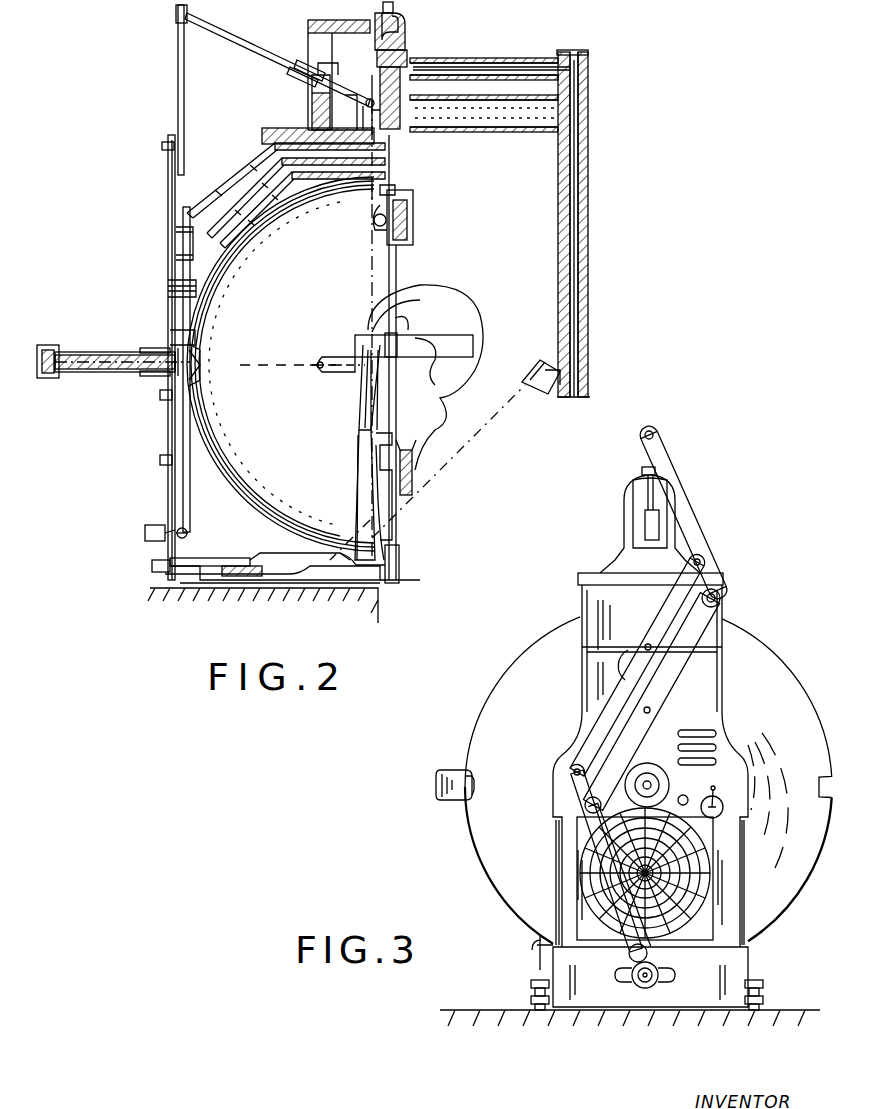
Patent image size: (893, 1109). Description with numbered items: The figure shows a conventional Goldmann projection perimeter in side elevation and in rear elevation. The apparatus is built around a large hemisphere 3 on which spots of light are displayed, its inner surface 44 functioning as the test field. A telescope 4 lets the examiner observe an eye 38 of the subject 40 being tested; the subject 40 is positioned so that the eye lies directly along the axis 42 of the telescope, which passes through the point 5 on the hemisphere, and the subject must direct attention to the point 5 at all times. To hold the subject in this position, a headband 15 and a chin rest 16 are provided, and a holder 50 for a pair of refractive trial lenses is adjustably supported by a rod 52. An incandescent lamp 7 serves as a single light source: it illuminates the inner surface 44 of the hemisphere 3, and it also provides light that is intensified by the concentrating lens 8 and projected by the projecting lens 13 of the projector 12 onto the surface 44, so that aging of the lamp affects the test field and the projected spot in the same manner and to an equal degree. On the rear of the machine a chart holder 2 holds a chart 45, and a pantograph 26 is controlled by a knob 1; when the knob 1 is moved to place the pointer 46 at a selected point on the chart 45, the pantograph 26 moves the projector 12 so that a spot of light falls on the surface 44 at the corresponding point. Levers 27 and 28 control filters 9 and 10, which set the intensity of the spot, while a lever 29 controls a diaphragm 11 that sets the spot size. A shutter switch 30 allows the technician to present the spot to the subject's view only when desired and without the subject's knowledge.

In FIG. 2, the knob 1 is at (140, 530).
In FIG. 3, the chart holder 2 is at (706, 940).
In FIG. 2, the hemisphere 3 is at (240, 488).
In FIG. 3, the hemisphere 3 is at (798, 902).
In FIG. 2, the telescope 4 is at (82, 350).
In FIG. 3, the telescope 4 is at (669, 790).
In FIG. 2, the point 5 is at (200, 360).
In FIG. 2, the incandescent lamp 7 is at (372, 226).
In FIG. 2, the concentrating lens 8 is at (380, 190).
In FIG. 2, the filter 9 is at (390, 146).
In FIG. 2, the filter 10 is at (390, 160).
In FIG. 2, the diaphragm 11 is at (390, 175).
In FIG. 2, the projector 12 is at (585, 345).
In FIG. 2, the projecting lens 13 is at (530, 392).
In FIG. 2, the headband 15 is at (362, 335).
In FIG. 2, the chin rest 16 is at (386, 437).
In FIG. 2, the pantograph 26 is at (183, 130).
In FIG. 3, the pantograph 26 is at (625, 940).
In FIG. 3, the lever 27 is at (716, 732).
In FIG. 3, the lever 28 is at (718, 747).
In FIG. 3, the lever 29 is at (718, 761).
In FIG. 3, the shutter switch 30 is at (718, 800).
In FIG. 2, the eye 38 is at (362, 385).
In FIG. 2, the subject 40 is at (462, 332).
In FIG. 2, the axis 42 is at (248, 362).
In FIG. 2, the inner surface 44 is at (212, 448).
In FIG. 3, the chart 45 is at (705, 885).
In FIG. 2, the pointer 46 is at (185, 533).
In FIG. 2, the holder 50 is at (355, 372).
In FIG. 2, the rod 52 is at (358, 445).